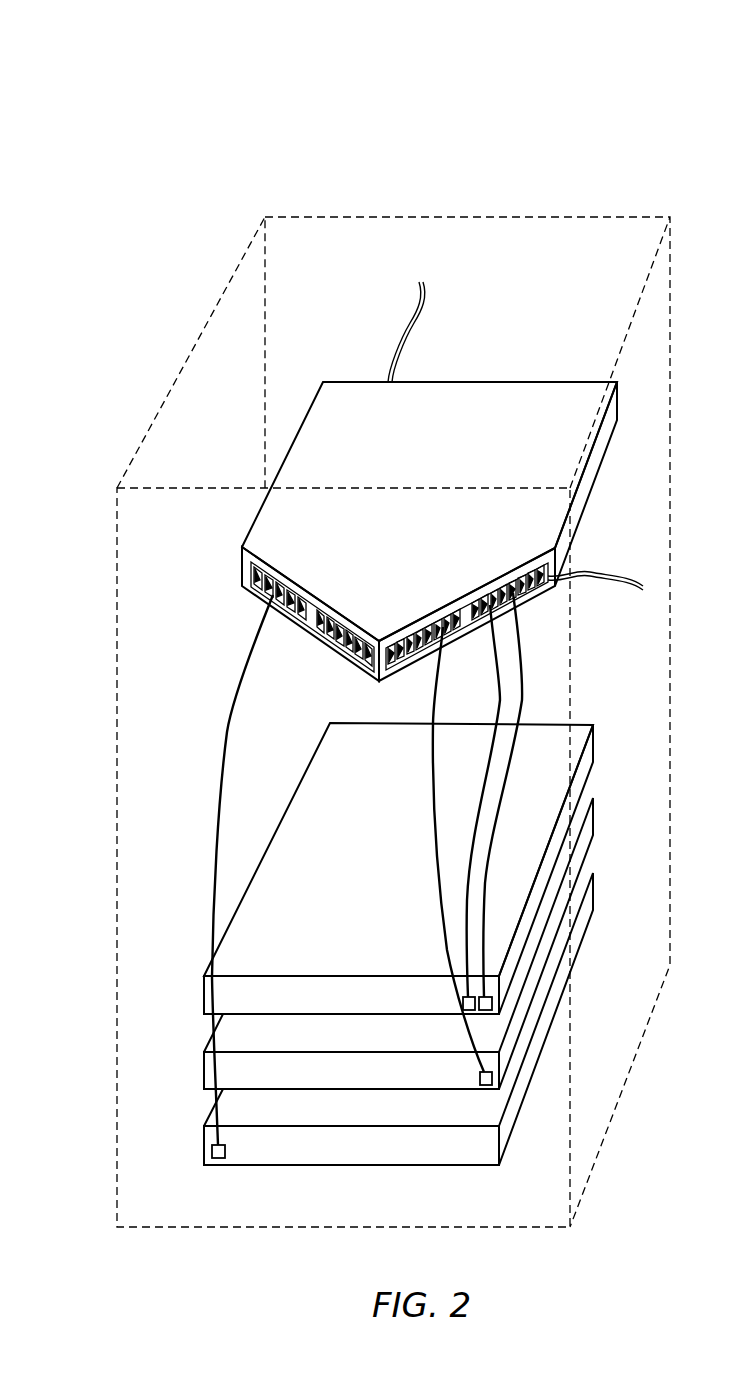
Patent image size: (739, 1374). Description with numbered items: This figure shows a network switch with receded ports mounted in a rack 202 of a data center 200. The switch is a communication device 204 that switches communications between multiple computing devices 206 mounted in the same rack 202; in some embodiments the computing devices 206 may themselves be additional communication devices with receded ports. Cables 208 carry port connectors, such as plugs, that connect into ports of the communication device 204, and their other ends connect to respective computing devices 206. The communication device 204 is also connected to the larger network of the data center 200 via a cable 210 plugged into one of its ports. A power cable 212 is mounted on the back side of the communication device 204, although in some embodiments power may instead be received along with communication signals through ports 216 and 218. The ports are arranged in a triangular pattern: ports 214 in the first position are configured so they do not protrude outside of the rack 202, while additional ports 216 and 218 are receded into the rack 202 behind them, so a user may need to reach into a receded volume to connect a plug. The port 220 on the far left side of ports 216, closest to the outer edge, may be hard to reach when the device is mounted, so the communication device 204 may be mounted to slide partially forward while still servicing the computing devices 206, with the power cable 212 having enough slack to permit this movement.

The data center 200 is at (120, 119).
The rack 202 is at (551, 217).
The communication device 204 is at (446, 457).
The computing devices 206 is at (583, 723).
The cables 208 is at (227, 732).
The cable 210 is at (617, 573).
The power cable 212 is at (406, 324).
The ports 214 is at (389, 670).
The ports 216 is at (271, 614).
The ports 218 is at (562, 597).
The port 220 is at (221, 570).